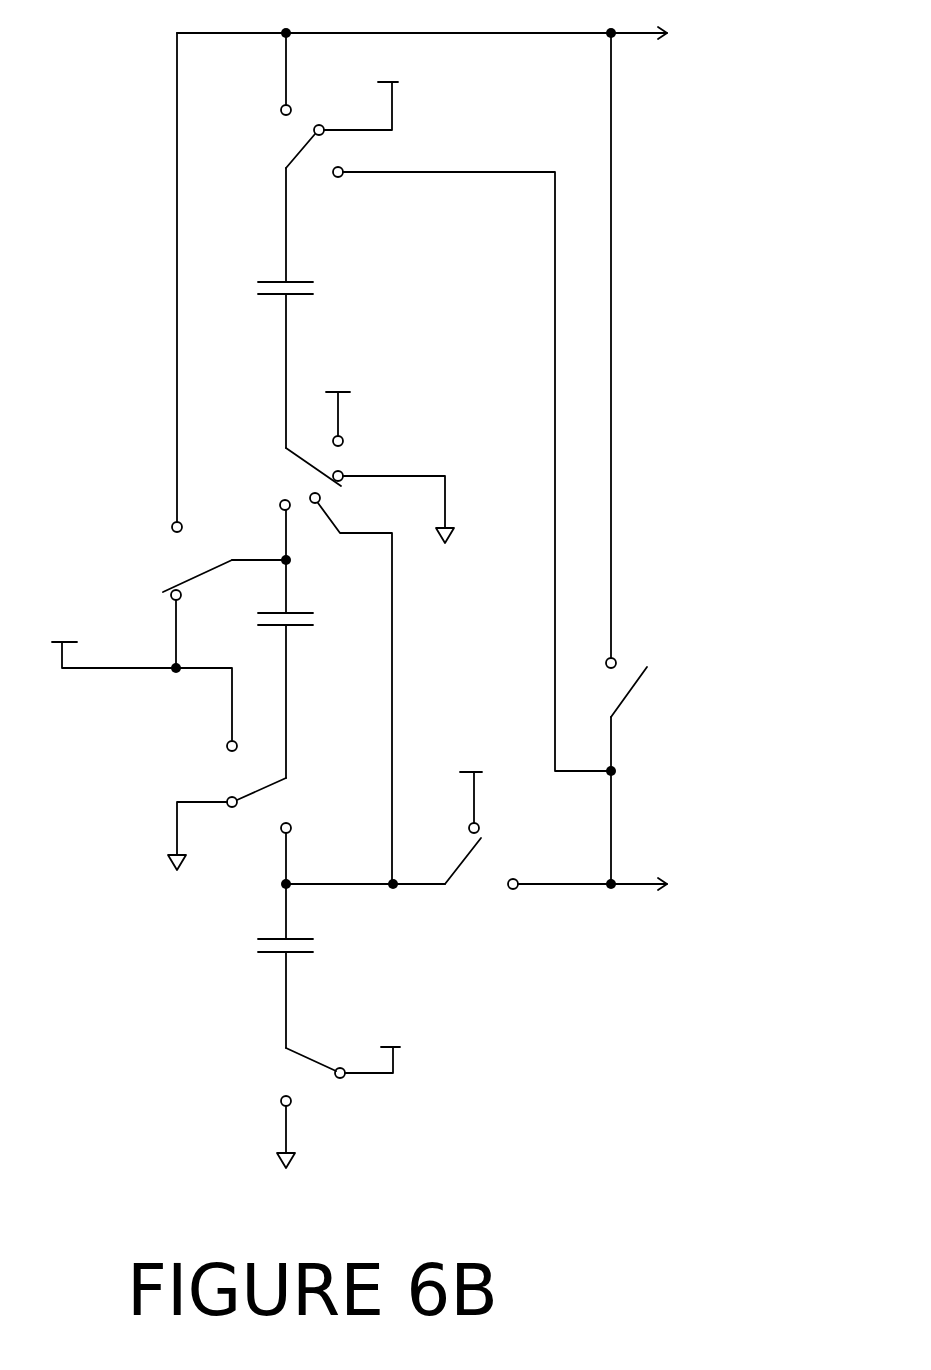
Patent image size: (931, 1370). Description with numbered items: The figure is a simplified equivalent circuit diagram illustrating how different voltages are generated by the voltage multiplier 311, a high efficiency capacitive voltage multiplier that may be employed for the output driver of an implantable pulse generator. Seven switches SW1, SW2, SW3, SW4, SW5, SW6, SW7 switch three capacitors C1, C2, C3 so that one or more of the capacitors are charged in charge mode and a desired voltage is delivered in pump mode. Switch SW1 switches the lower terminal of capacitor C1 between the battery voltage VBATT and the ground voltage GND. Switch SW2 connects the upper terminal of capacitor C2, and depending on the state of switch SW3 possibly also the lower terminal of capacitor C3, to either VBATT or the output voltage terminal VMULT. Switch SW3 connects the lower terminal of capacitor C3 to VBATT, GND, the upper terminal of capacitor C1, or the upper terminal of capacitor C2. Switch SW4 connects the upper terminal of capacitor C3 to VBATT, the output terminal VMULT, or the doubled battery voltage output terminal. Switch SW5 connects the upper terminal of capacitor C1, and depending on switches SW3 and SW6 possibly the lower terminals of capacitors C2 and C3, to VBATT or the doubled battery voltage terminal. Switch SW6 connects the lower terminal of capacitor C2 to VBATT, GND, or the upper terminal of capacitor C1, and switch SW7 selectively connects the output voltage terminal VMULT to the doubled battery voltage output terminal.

The voltage multiplier 311 is at (580, 1007).
The switch SW1 is at (282, 1077).
The switch SW2 is at (168, 648).
The switch SW3 is at (283, 479).
The switch SW4 is at (284, 141).
The switch SW5 is at (475, 875).
The switch SW6 is at (290, 805).
The switch SW7 is at (652, 689).
The capacitor C1 is at (310, 947).
The capacitor C2 is at (310, 622).
The capacitor C3 is at (310, 287).